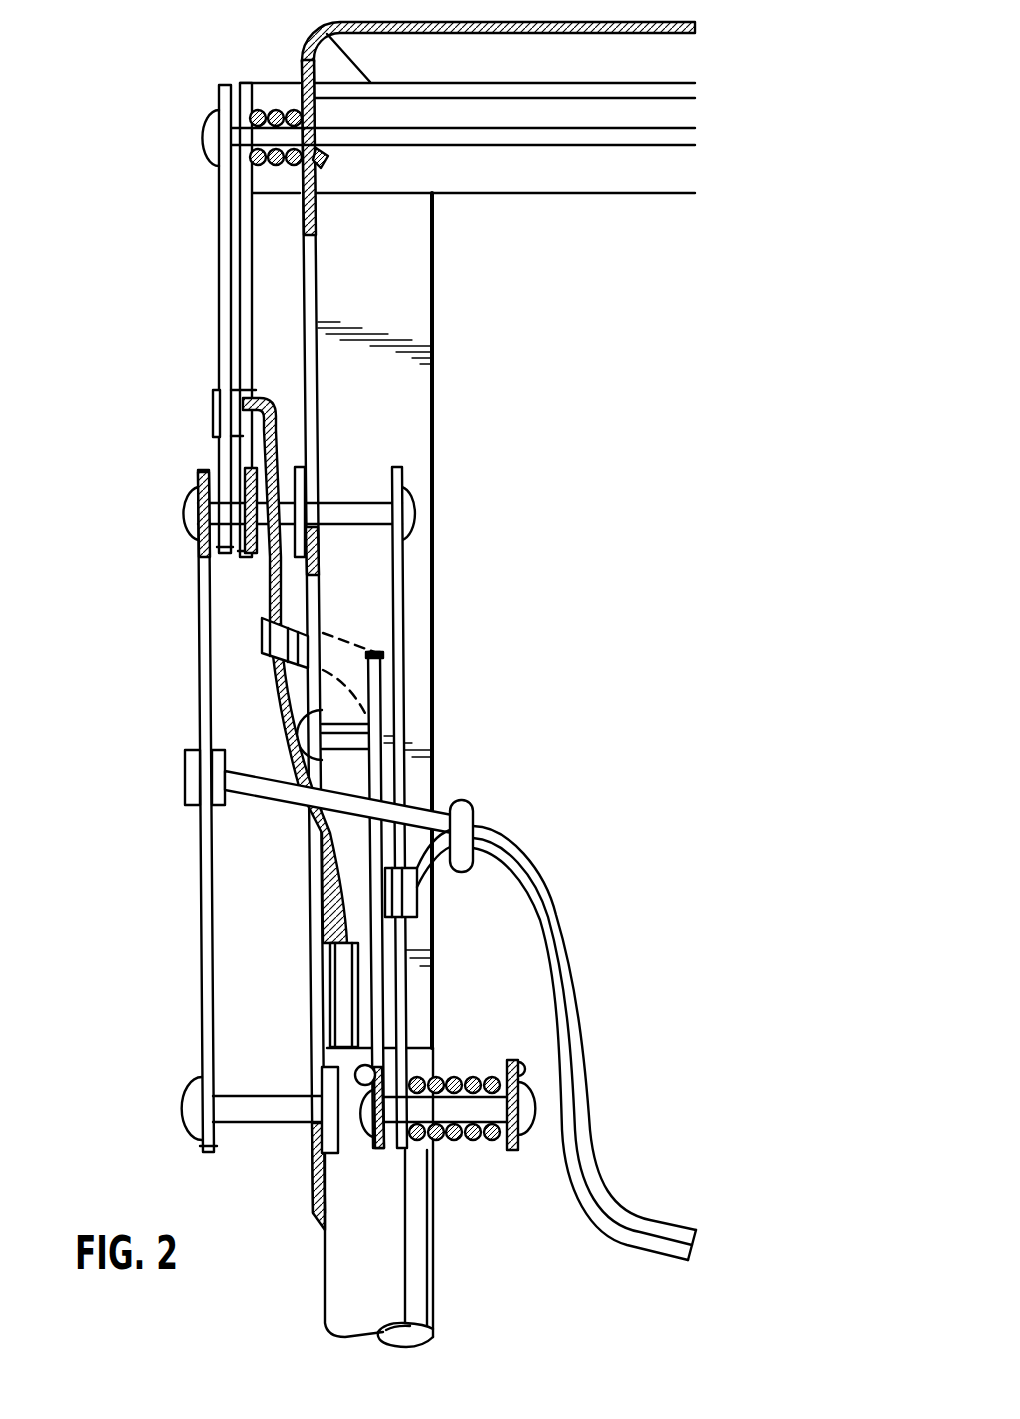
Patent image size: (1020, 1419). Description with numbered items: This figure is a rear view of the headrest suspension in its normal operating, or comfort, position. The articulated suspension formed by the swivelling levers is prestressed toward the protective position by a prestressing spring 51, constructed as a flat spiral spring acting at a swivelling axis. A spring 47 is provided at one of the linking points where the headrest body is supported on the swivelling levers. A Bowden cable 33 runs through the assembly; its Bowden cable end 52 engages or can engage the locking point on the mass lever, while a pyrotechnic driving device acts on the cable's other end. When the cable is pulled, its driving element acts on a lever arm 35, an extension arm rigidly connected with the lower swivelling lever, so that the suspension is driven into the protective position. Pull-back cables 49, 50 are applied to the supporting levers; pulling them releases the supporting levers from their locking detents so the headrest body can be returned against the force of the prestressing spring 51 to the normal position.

The Bowden cable 33 is at (272, 590).
The lever arm 35 is at (262, 648).
The spring 47 is at (455, 1075).
The pull-back cable 49 is at (532, 895).
The pull-back cable 50 is at (497, 838).
The prestressing spring 51 is at (280, 108).
The Bowden cable end 52 is at (224, 413).